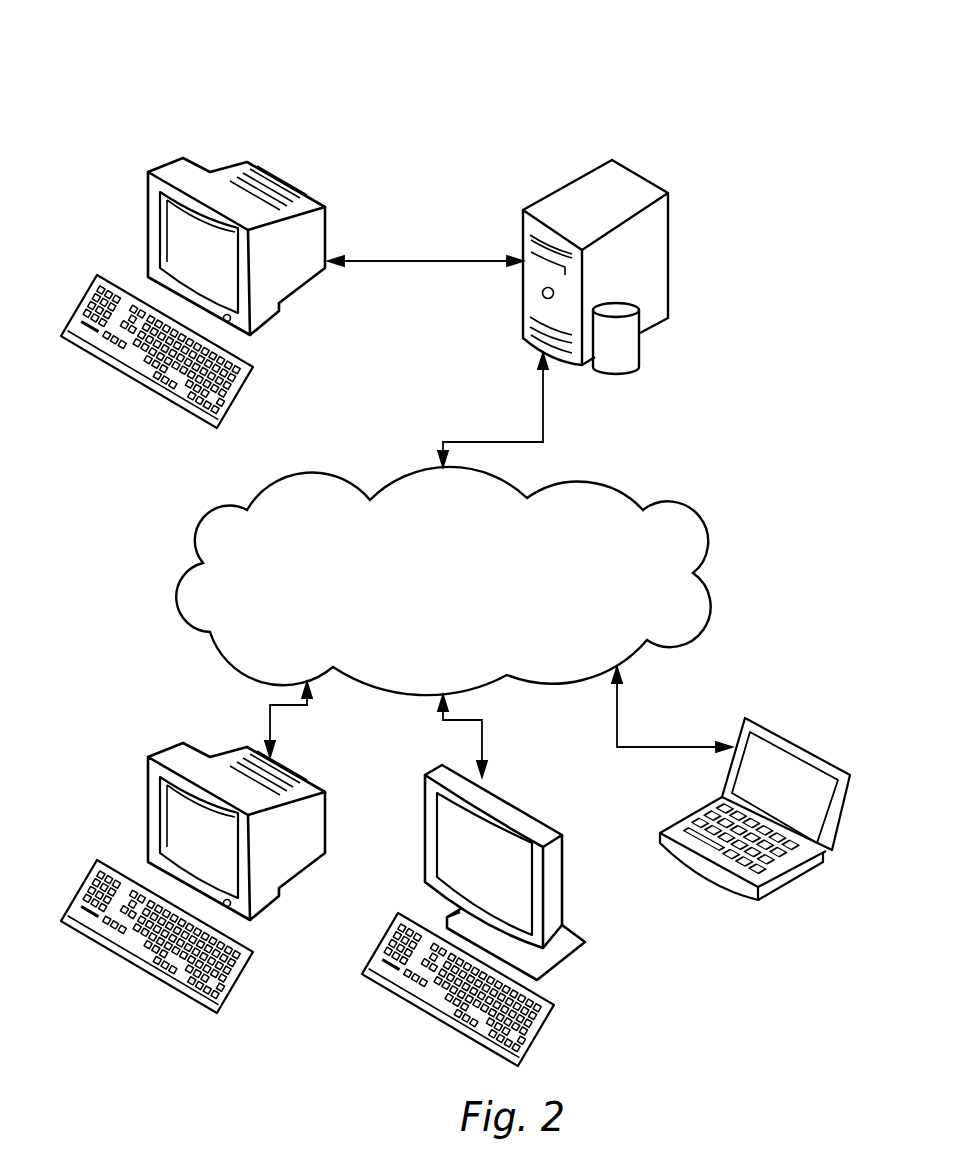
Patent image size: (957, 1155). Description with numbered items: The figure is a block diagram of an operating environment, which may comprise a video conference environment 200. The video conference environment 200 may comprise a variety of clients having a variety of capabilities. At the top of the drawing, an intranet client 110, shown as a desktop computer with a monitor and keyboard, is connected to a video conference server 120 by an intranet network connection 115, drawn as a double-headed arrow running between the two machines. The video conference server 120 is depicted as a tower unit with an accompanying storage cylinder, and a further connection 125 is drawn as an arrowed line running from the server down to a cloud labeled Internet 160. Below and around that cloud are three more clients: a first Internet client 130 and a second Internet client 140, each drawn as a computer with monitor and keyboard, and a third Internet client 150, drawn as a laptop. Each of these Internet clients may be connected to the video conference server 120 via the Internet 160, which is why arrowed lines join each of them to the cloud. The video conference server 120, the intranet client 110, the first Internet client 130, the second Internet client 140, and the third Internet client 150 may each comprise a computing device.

The video conference environment 200 is at (785, 35).
The intranet client 110 is at (302, 194).
The intranet network connection 115 is at (408, 258).
The video conference server 120 is at (640, 176).
The network connection 125 is at (467, 441).
The first Internet client 130 is at (302, 779).
The second Internet client 140 is at (523, 802).
The third Internet client 150 is at (770, 723).
The Internet 160 is at (657, 509).